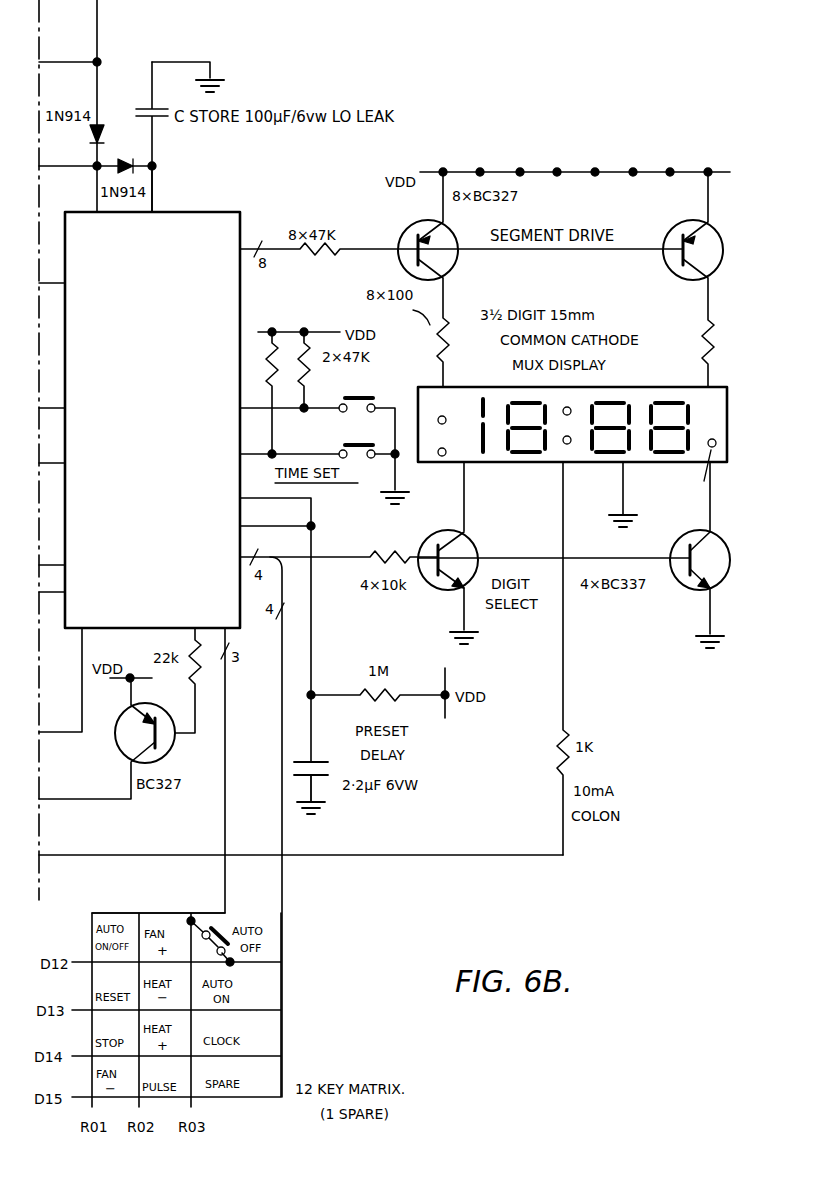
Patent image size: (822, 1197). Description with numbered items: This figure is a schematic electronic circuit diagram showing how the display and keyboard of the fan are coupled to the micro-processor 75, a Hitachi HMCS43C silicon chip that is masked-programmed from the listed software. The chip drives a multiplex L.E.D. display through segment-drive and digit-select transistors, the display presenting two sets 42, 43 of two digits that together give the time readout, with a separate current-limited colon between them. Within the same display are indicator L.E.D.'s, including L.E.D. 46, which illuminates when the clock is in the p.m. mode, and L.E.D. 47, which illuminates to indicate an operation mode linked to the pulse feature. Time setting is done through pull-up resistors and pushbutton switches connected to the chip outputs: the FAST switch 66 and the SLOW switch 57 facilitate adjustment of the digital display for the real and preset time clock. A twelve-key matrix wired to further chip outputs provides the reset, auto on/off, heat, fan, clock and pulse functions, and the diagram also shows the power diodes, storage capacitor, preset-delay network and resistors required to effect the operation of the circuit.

The micro-processor 75 is at (160, 522).
The fast time-set switch 66 is at (378, 397).
The SLOW switch 57 is at (345, 446).
The L.E.D. 46 is at (447, 455).
The first set of two digits 42 is at (520, 450).
The second set of two digits 43 is at (598, 450).
The L.E.D. 47 is at (710, 437).